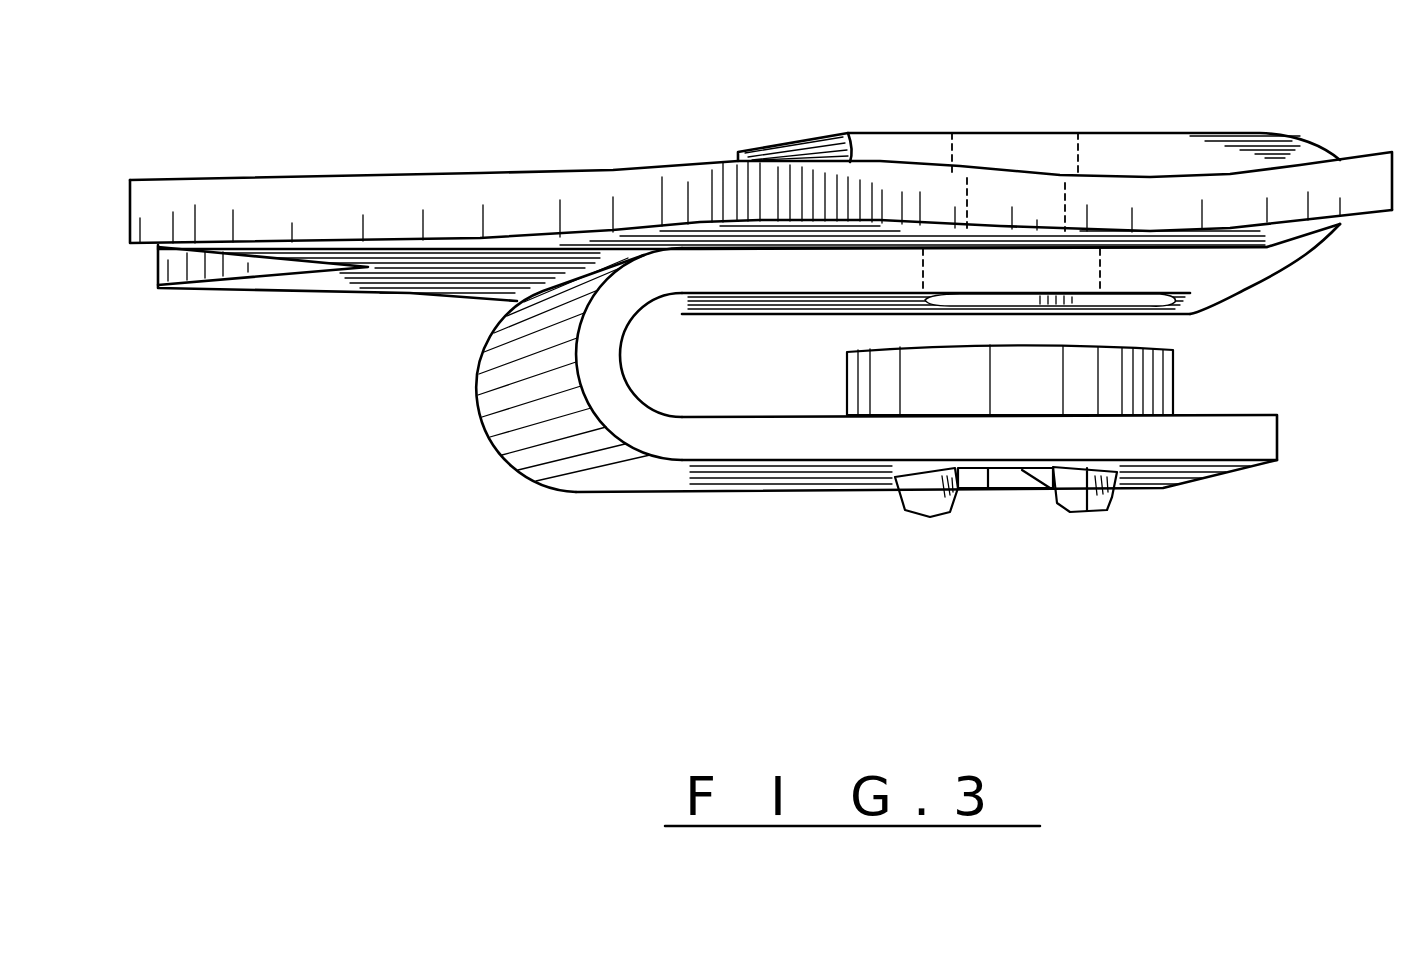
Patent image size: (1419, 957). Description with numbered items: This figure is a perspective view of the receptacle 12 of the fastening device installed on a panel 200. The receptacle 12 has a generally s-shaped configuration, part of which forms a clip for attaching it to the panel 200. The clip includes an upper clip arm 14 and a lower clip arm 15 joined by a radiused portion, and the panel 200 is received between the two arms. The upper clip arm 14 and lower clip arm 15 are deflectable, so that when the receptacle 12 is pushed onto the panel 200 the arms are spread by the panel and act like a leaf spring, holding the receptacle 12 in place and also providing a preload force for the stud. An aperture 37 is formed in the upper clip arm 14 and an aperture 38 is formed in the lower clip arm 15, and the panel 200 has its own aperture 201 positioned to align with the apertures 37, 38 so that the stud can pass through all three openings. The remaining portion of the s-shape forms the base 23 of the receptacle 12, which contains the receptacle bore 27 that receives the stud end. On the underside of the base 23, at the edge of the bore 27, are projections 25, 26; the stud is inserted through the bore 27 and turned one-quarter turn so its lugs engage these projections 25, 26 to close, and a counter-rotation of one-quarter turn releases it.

The panel 200 is at (345, 178).
The aperture 201 is at (968, 203).
The aperture 37 is at (1082, 153).
The upper clip arm 14 is at (1207, 160).
The lower clip arm 15 is at (771, 268).
The aperture 38 is at (1073, 270).
The base 23 is at (1250, 438).
The projection 25 is at (920, 491).
The projection 26 is at (1117, 492).
The receptacle bore 27 is at (1003, 478).
The receptacle 12 is at (574, 593).